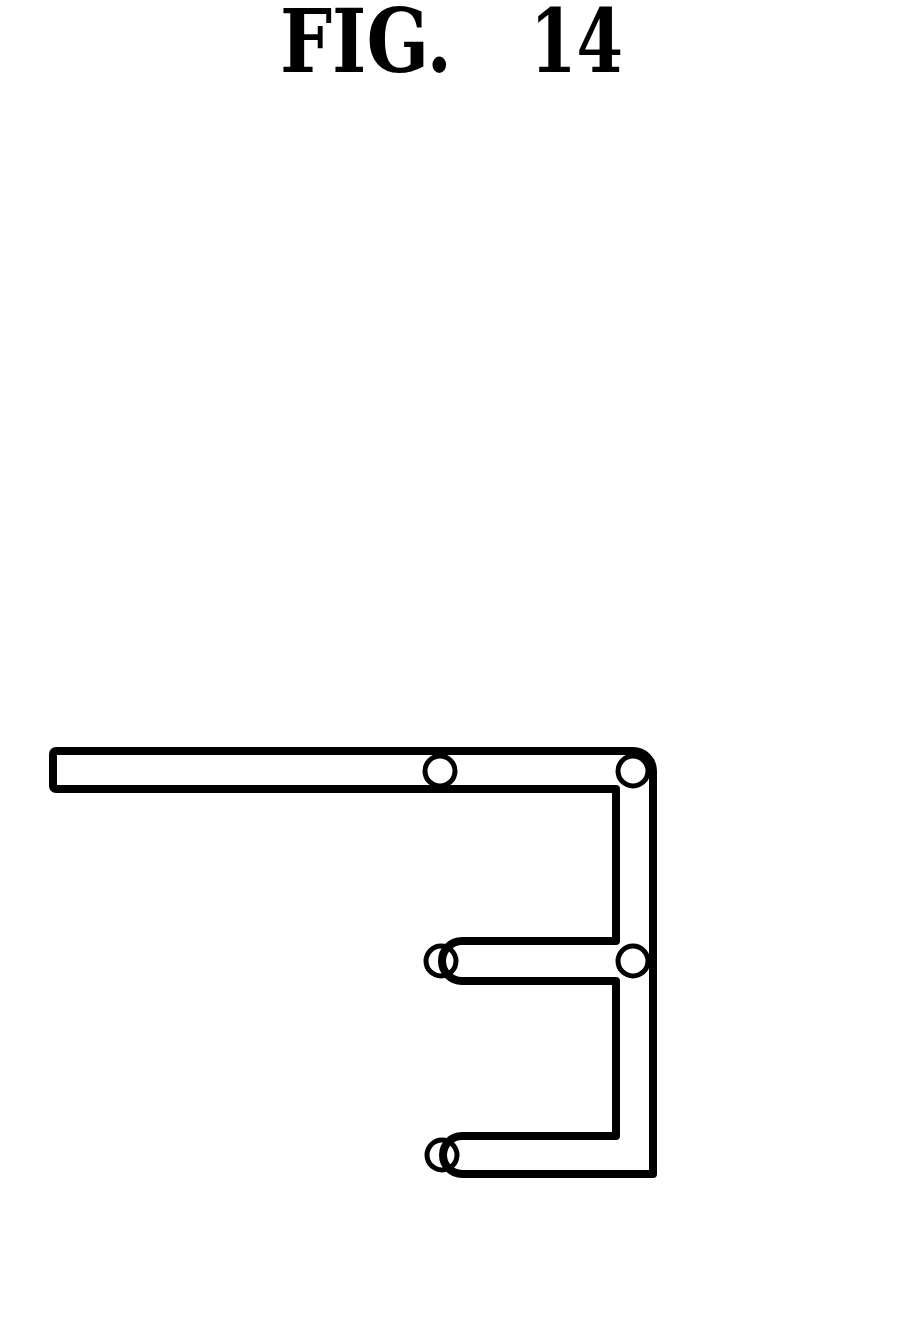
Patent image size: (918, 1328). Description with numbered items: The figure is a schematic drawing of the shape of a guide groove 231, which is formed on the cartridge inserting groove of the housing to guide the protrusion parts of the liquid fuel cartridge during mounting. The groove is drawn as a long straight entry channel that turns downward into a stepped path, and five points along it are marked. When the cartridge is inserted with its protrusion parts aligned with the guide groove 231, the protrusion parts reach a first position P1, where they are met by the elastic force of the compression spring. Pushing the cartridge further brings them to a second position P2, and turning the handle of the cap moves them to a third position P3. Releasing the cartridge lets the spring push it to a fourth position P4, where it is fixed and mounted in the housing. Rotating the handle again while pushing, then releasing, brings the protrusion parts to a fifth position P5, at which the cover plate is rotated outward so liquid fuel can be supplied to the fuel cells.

The guide groove 231 is at (200, 732).
The first position P1 is at (440, 771).
The second position P2 is at (634, 771).
The third position P3 is at (645, 961).
The fourth position P4 is at (428, 961).
The fifth position P5 is at (442, 1170).